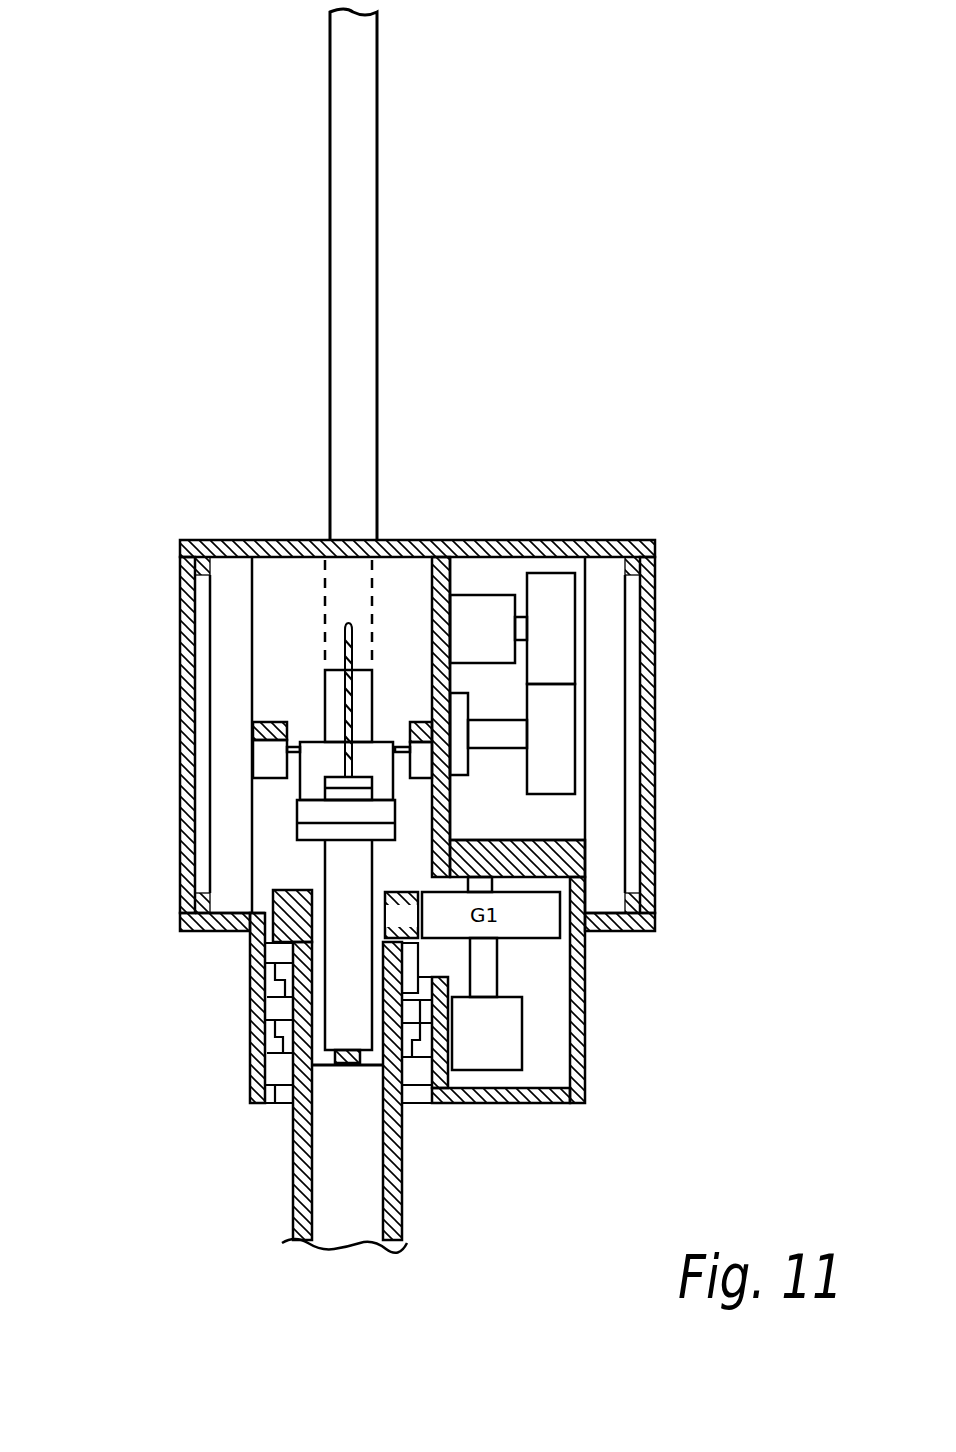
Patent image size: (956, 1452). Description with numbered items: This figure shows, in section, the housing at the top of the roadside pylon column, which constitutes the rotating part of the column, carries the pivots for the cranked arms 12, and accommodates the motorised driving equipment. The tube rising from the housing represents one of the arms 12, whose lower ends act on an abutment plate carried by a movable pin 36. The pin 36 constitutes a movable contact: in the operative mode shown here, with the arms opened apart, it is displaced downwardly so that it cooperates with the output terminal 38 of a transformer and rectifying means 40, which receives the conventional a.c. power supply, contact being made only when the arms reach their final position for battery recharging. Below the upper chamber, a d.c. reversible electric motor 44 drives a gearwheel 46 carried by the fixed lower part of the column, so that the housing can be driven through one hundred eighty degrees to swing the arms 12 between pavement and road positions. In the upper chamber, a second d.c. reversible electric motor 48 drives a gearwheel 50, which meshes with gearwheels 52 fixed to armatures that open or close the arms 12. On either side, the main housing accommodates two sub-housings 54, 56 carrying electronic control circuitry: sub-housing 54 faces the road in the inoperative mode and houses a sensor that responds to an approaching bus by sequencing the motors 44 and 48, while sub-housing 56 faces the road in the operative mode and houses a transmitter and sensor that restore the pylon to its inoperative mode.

The cranked arms 12 is at (377, 237).
The movable pin 36 is at (347, 945).
The output terminal 38 is at (343, 1062).
The transformer and rectifying means 40 is at (347, 1137).
The d.c. reversible electric motor 44 is at (517, 1033).
The gearwheel 46 is at (430, 890).
The d.c. reversible electric motor 48 is at (477, 594).
The gearwheel 50 is at (554, 569).
The gearwheels 52 is at (569, 723).
The sub-housing 54 is at (222, 753).
The sub-housing 56 is at (615, 637).